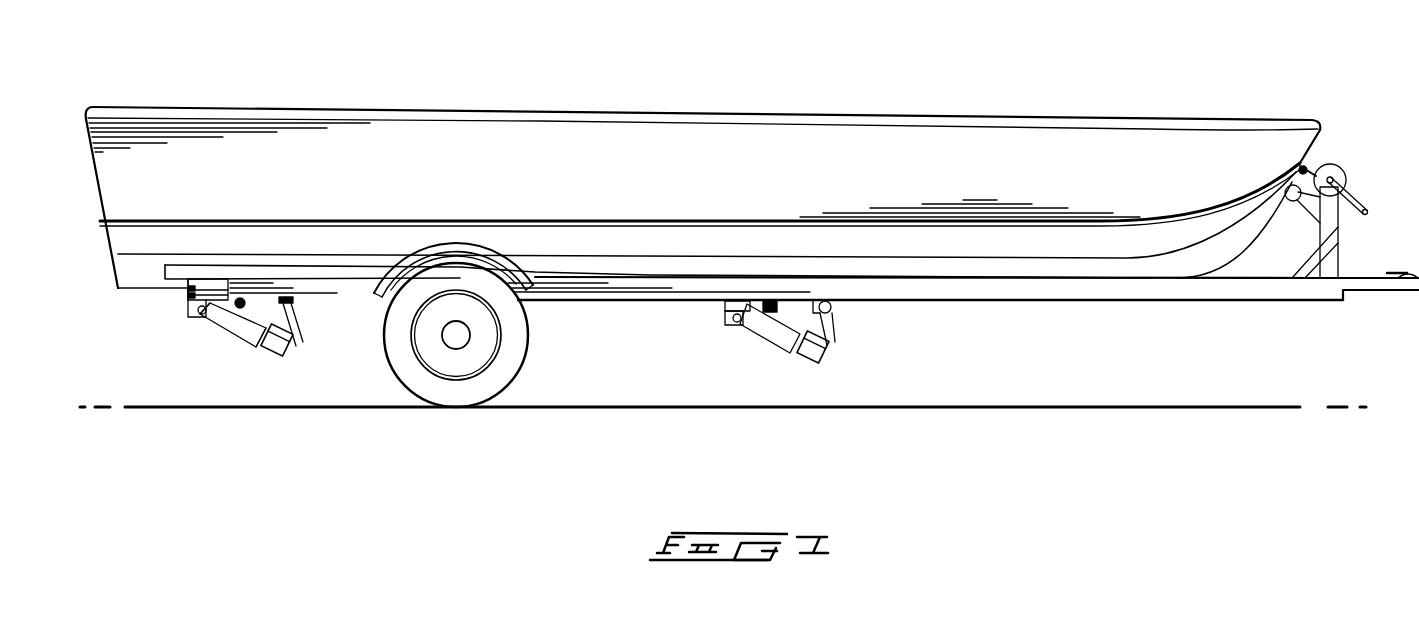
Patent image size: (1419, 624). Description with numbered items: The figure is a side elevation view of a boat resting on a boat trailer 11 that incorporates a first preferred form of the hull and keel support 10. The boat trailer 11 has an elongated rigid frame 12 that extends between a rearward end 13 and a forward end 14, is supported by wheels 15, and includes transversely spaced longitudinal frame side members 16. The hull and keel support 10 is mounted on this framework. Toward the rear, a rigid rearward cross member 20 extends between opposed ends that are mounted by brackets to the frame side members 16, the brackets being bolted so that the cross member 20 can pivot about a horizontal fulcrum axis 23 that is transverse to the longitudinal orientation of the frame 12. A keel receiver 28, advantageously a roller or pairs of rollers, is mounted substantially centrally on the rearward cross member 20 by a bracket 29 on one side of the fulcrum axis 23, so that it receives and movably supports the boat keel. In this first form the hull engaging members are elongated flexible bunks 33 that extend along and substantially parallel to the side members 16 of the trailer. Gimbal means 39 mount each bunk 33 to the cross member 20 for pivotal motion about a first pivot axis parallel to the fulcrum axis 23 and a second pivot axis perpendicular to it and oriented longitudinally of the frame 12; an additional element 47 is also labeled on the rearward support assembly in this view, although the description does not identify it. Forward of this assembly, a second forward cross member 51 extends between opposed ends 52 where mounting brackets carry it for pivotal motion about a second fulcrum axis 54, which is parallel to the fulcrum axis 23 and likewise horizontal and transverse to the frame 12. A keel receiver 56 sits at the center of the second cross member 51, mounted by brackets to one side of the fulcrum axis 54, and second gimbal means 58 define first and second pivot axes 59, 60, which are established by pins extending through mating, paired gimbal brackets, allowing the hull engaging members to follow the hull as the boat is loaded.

The hull and keel support 10 is at (855, 337).
The boat trailer 11 is at (673, 363).
The trailer frame 12 is at (1005, 292).
The rearward end 13 is at (345, 290).
The forward end 14 is at (1308, 292).
The wheels 15 is at (508, 367).
The longitudinal frame side members 16 is at (1060, 292).
The rearward cross member 20 is at (260, 347).
The fulcrum axis 23 is at (241, 290).
The keel receiver 28 is at (307, 298).
The bracket 29 is at (300, 322).
The elongated flexible bunks 33 is at (637, 275).
The gimbal means 39 is at (176, 310).
The pivot arm 47 is at (210, 323).
The second forward cross member 51 is at (835, 357).
The opposed ends 52 is at (790, 352).
The second fulcrum axis 54 is at (773, 298).
The keel receiver 56 is at (838, 308).
The second gimbal means 58 is at (720, 316).
The first pivot axis 59 is at (736, 324).
The second pivot axis 60 is at (718, 305).